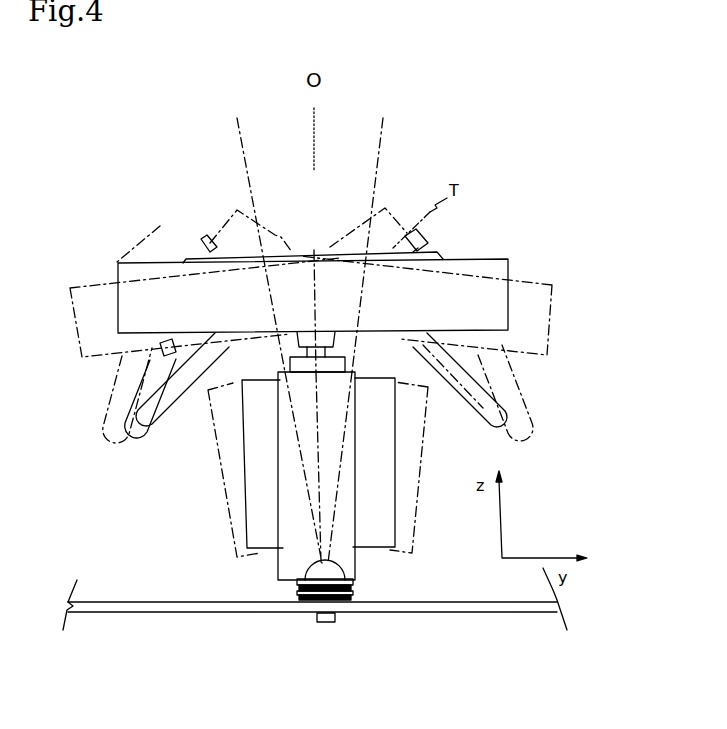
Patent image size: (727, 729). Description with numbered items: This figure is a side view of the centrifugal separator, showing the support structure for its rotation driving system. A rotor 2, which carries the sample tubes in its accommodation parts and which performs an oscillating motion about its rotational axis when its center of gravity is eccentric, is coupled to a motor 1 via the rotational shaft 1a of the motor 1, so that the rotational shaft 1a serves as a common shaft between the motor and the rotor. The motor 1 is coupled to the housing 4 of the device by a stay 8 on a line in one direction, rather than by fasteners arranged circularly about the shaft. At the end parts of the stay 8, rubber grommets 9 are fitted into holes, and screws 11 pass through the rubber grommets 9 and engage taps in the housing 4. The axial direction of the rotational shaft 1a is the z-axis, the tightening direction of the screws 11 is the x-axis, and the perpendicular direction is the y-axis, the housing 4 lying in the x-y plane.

The motor 1 is at (273, 450).
The rotational shaft 1a is at (326, 352).
The rotor 2 is at (237, 297).
The housing 4 is at (193, 612).
The stay 8 is at (314, 477).
The rubber grommet 9 is at (343, 600).
The screw 11 is at (323, 623).